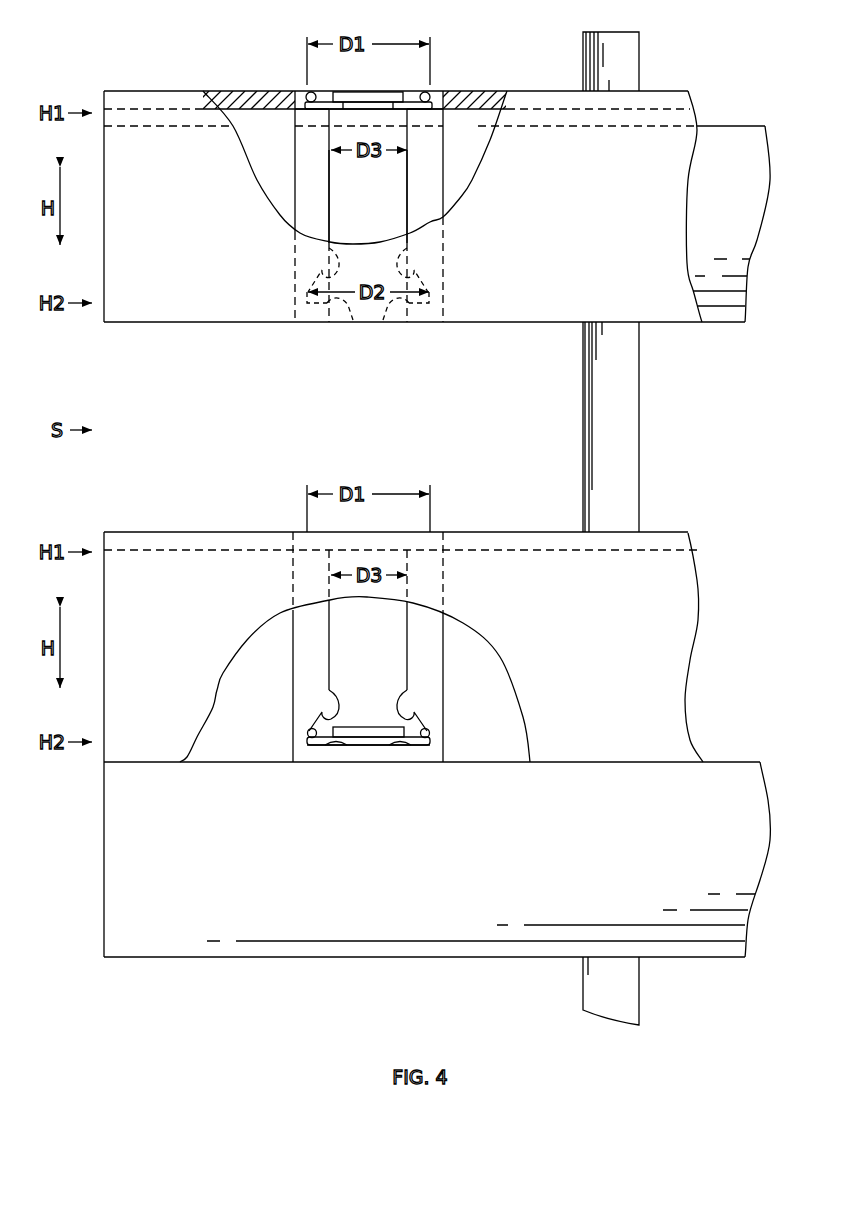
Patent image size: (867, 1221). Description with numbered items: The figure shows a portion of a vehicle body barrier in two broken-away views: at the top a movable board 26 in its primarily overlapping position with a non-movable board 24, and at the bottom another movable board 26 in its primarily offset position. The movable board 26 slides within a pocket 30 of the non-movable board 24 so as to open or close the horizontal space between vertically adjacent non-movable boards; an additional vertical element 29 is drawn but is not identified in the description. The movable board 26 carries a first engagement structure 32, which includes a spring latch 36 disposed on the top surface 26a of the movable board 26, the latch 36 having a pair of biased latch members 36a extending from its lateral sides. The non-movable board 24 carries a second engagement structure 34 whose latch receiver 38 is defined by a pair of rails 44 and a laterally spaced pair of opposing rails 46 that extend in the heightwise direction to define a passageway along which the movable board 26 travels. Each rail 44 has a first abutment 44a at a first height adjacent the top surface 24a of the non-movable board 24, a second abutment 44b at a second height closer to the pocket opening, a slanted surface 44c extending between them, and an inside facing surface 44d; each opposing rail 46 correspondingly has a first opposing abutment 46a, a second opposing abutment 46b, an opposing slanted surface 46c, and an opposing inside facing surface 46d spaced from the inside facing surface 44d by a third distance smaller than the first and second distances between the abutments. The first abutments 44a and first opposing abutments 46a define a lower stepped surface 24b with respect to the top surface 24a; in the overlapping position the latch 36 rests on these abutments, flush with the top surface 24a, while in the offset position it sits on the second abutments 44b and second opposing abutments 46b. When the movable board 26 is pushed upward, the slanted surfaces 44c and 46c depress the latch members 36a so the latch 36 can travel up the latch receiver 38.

The non-movable board 24 is at (665, 91).
The top surface 24a is at (144, 91).
The lower stepped surface 24b is at (303, 108).
The movable board 26 is at (733, 126).
The top surface 26a is at (676, 126).
The support rod 29 is at (640, 410).
The pocket 30 is at (613, 109).
The first engagement structure 32 is at (380, 812).
The second engagement structure 34 is at (403, 30).
The spring latch 36 is at (367, 88).
The latch member 36a is at (308, 732).
The latch receiver 38 is at (490, 205).
The rail 44 is at (328, 173).
The first abutment 44a is at (318, 112).
The second abutment 44b is at (353, 326).
The slanted surface 44c is at (327, 250).
The inside facing surface 44d is at (330, 213).
The opposing rail 46 is at (407, 173).
The first opposing abutment 46a is at (423, 112).
The second opposing abutment 46b is at (394, 326).
The opposing slanted surface 46c is at (409, 250).
The opposing inside facing surface 46d is at (403, 188).